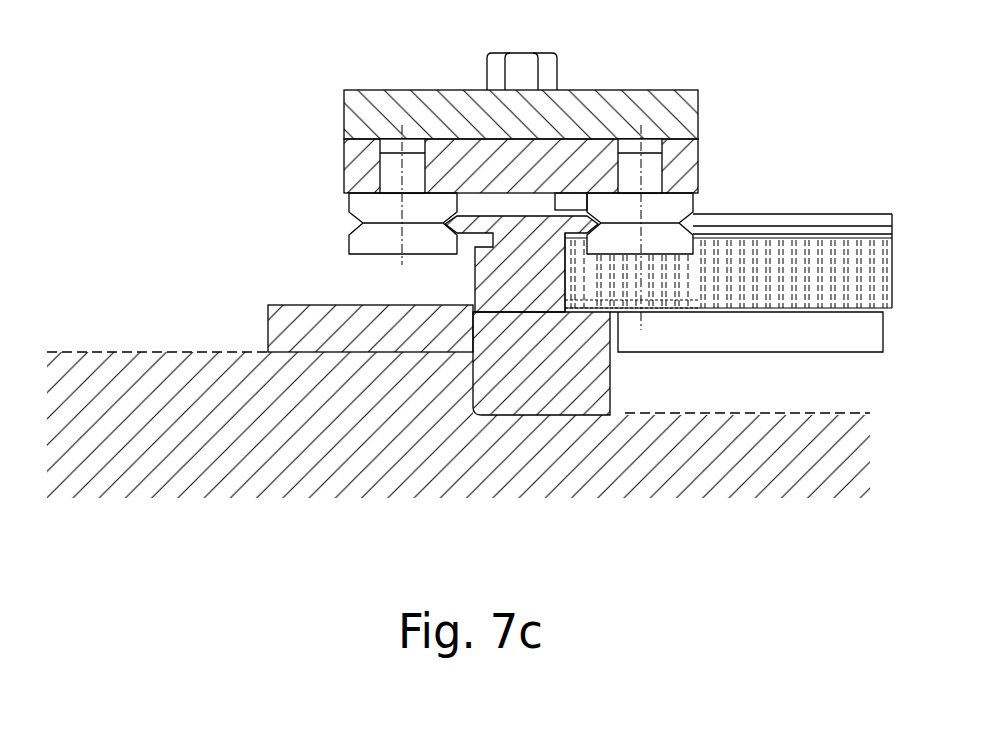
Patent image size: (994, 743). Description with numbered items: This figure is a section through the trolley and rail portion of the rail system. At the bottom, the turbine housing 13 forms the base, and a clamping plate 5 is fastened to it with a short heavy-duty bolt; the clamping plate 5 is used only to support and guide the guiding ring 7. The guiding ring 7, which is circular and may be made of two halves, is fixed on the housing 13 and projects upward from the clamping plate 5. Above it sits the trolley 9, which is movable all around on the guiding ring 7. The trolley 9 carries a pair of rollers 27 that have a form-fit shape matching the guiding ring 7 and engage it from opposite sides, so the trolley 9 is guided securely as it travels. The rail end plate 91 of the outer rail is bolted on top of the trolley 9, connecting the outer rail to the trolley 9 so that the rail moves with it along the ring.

The clamping plate 5 is at (278, 330).
The guiding ring 7 is at (507, 290).
The trolley 9 is at (462, 150).
The turbine housing 13 is at (226, 486).
The roller 27 is at (352, 205).
The rail end plate 91 is at (626, 97).